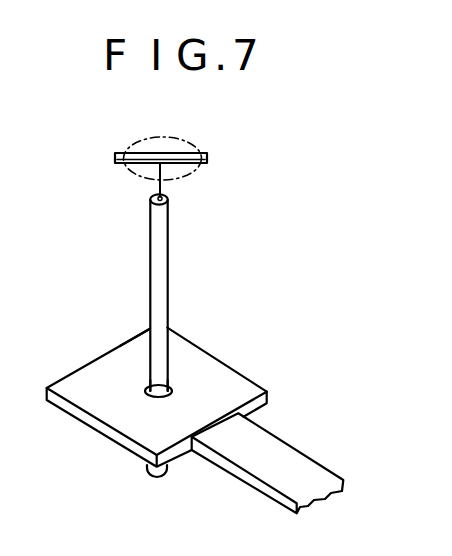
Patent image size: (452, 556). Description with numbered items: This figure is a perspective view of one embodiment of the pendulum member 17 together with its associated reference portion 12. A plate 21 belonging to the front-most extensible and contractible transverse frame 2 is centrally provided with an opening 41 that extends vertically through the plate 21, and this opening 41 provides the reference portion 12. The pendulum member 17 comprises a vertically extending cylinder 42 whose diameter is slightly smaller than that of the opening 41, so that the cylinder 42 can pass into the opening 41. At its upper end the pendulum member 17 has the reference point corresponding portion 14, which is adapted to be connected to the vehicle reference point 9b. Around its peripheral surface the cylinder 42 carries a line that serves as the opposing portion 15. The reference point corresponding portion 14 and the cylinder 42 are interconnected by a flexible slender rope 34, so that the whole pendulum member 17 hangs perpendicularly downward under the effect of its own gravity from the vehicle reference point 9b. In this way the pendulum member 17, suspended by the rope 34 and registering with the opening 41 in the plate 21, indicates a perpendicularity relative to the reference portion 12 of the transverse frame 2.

The front-most extensible and contractible transverse frame 2 is at (288, 427).
The vehicle reference point 9b is at (184, 142).
The reference portion 12 is at (164, 395).
The reference point corresponding portion 14 is at (207, 158).
The opposing portion 15 is at (162, 388).
The pendulum member 17 is at (154, 292).
The plate 21 is at (237, 388).
The flexible slender rope 34 is at (163, 188).
The opening 41 is at (173, 385).
The cylinder 42 is at (150, 322).